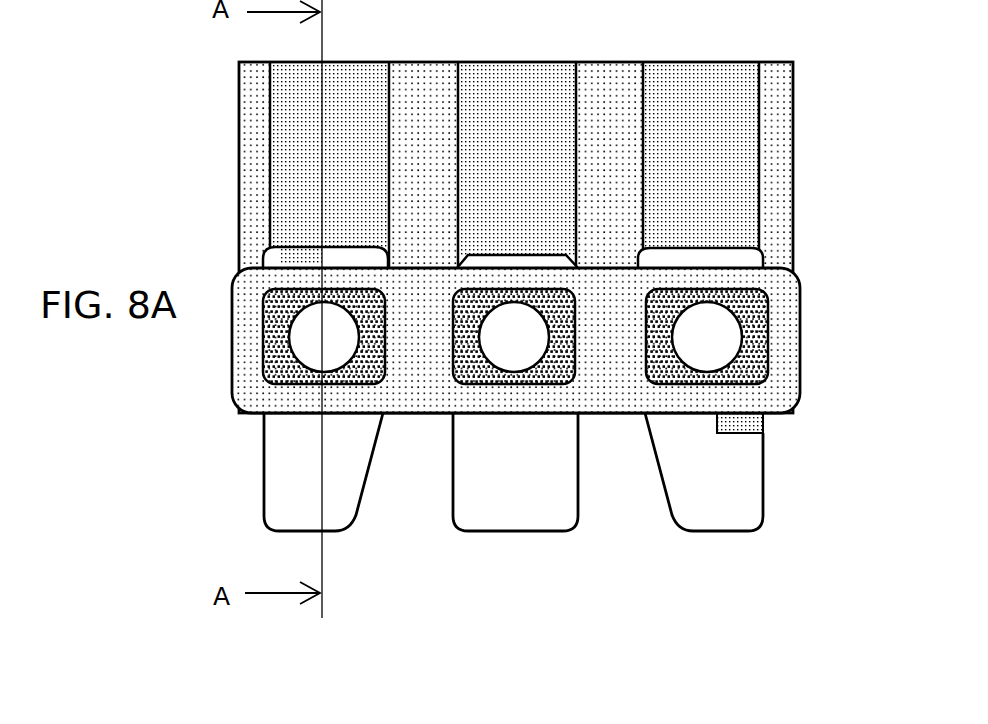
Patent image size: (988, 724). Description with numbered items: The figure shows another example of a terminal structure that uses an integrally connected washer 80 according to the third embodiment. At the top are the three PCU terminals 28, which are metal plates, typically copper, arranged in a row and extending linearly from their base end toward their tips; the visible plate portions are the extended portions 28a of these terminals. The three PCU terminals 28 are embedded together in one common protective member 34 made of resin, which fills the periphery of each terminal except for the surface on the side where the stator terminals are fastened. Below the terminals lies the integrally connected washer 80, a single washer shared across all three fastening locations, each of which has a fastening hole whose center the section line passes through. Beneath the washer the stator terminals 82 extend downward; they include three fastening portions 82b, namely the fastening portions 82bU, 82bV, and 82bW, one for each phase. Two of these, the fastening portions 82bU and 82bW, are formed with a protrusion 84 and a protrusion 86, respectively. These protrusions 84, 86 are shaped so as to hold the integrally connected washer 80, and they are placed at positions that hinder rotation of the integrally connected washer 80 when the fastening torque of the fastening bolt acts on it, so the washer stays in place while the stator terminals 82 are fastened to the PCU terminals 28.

The PCU terminal 28 is at (566, 207).
The extended portion 28a is at (705, 170).
The protective member 34 is at (777, 210).
The integrally connected washer 80 is at (782, 300).
The stator terminal 82 is at (565, 568).
The fastening portion 82b is at (513, 568).
The fastening portion 82bU is at (340, 486).
The fastening portion 82bV is at (505, 507).
The fastening portion 82bW is at (700, 528).
The protrusion 84 is at (290, 245).
The protrusion 86 is at (763, 425).